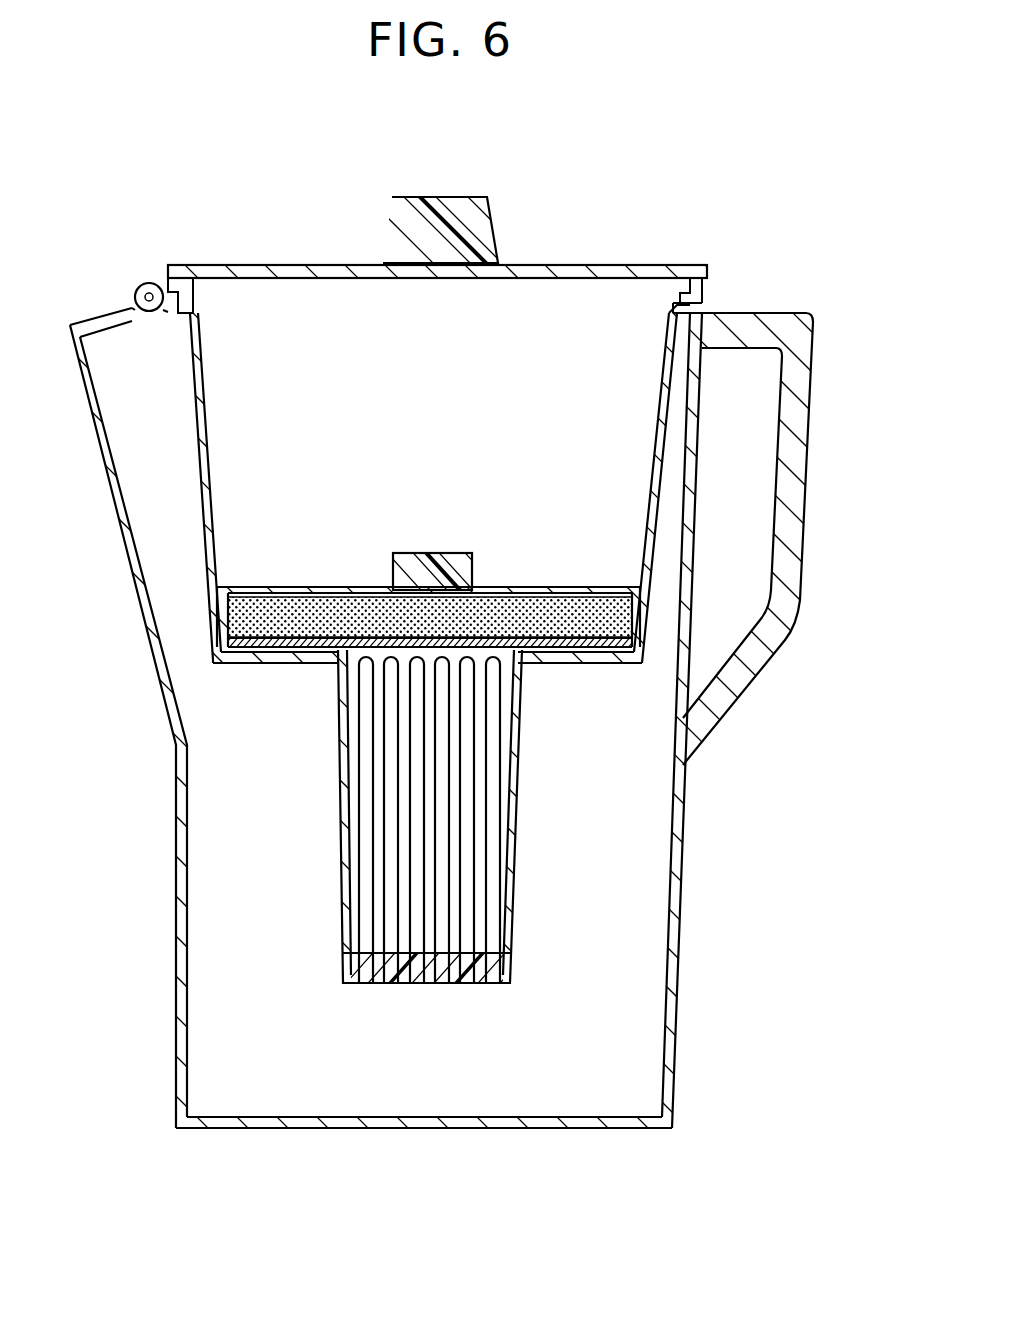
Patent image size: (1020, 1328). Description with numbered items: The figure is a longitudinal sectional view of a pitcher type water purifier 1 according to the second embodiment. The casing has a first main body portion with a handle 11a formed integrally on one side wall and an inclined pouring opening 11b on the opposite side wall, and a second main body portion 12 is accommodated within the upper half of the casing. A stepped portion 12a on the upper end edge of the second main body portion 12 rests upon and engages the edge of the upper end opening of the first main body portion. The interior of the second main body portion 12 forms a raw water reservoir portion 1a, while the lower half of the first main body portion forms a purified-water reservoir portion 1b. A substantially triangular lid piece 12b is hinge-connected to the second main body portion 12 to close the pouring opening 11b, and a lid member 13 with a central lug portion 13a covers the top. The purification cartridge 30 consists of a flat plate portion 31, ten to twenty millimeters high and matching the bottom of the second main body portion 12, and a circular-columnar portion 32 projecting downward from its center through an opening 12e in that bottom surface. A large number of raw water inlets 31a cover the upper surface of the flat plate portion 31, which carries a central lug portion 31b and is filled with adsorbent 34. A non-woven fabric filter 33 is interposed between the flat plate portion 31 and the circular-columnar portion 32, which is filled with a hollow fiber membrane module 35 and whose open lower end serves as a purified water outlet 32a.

The pitcher type water purifier 1 is at (672, 146).
The raw water reservoir portion 1a is at (297, 305).
The purified-water reservoir portion 1b is at (640, 1068).
The handle 11a is at (812, 506).
The pouring opening 11b is at (105, 490).
The second main body portion 12 is at (201, 584).
The stepped portion 12a is at (703, 292).
The lid piece 12b is at (105, 317).
The opening for insertion of the purification cartridge 12e is at (338, 664).
The lid member 13 is at (608, 258).
The lug portion 13a is at (448, 197).
The purification cartridge 30 is at (517, 927).
The flat plate portion 31 is at (572, 587).
The raw water inlets 31a is at (330, 587).
The lug portion 31b is at (440, 553).
The circular-columnar portion 32 is at (520, 758).
The purified water outlet 32a is at (355, 984).
The filter 33 is at (602, 661).
The adsorbent 34 is at (520, 612).
The hollow fiber membrane module 35 is at (346, 898).